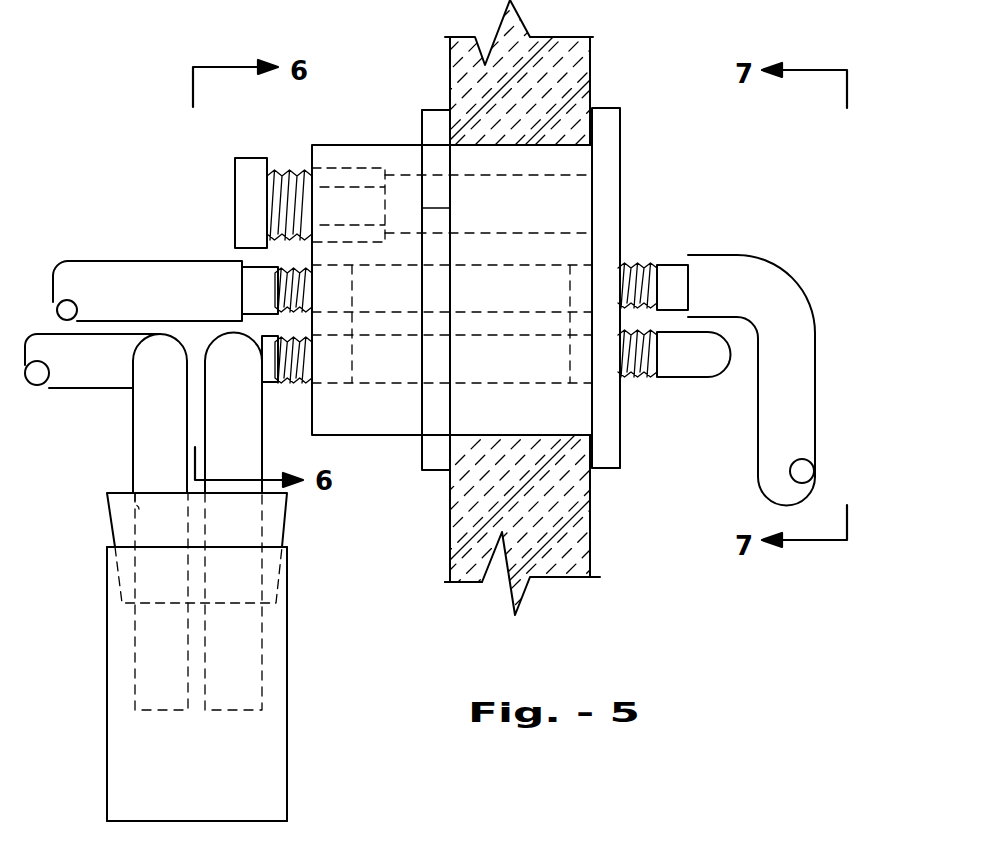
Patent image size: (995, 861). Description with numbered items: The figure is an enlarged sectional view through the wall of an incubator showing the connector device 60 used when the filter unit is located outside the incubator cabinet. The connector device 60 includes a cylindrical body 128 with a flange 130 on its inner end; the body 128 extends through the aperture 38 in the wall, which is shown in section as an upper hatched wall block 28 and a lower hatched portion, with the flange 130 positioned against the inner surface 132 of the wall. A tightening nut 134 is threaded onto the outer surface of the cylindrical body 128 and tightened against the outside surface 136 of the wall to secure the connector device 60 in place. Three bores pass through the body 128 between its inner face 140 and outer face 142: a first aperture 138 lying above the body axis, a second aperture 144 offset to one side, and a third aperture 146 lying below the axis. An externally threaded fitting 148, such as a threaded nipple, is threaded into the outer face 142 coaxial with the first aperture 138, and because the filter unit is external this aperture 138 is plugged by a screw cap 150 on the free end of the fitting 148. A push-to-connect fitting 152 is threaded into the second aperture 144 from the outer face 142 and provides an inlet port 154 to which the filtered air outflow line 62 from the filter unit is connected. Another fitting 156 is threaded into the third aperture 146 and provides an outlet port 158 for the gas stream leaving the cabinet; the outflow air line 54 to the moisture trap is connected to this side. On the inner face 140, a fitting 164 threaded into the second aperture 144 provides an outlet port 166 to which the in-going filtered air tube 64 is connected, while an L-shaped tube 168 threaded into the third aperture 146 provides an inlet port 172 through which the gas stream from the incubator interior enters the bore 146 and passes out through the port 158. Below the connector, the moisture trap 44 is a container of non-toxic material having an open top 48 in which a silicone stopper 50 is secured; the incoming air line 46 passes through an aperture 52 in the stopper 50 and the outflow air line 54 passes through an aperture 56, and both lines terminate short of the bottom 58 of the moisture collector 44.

The upper wall block 28 is at (590, 62).
The aperture 38 is at (590, 125).
The moisture trap 44 is at (275, 683).
The incoming air line 46 is at (152, 450).
The open top 48 is at (128, 546).
The silicone stopper 50 is at (270, 503).
The aperture 52 is at (137, 505).
The outflow air line 54 is at (222, 405).
The aperture 56 is at (258, 527).
The bottom 58 is at (267, 817).
The connector device 60 is at (420, 120).
The filtered air outflow line 62 is at (110, 273).
The in-going filtered air tube 64 is at (752, 280).
The cylindrical body 128 is at (398, 153).
The flange 130 is at (608, 118).
The inner surface 132 is at (590, 535).
The tightening nut 134 is at (440, 470).
The outside surface 136 is at (452, 536).
The first aperture 138 is at (555, 178).
The inner face 140 is at (620, 155).
The outer face 142 is at (312, 162).
The second aperture 144 is at (552, 268).
The third aperture 146 is at (595, 400).
The externally threaded fitting 148 is at (307, 172).
The screw cap 150 is at (247, 205).
The fitting 152 is at (265, 295).
The inlet port 154 is at (283, 265).
The fitting 156 is at (298, 380).
The outlet port 158 is at (270, 365).
The fitting 164 is at (635, 260).
The outlet port 166 is at (673, 258).
The L-shaped tube 168 is at (673, 355).
The inlet port 172 is at (630, 372).